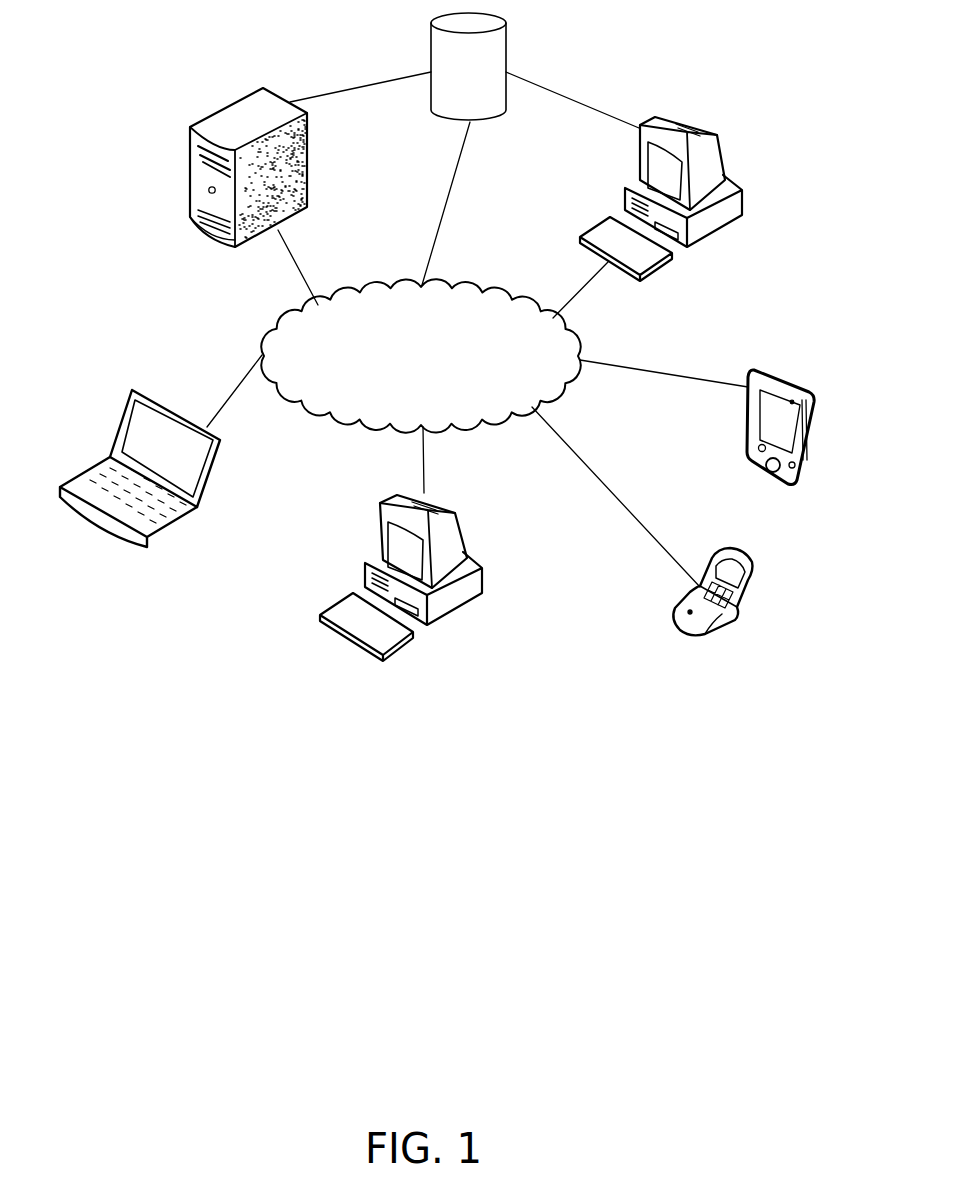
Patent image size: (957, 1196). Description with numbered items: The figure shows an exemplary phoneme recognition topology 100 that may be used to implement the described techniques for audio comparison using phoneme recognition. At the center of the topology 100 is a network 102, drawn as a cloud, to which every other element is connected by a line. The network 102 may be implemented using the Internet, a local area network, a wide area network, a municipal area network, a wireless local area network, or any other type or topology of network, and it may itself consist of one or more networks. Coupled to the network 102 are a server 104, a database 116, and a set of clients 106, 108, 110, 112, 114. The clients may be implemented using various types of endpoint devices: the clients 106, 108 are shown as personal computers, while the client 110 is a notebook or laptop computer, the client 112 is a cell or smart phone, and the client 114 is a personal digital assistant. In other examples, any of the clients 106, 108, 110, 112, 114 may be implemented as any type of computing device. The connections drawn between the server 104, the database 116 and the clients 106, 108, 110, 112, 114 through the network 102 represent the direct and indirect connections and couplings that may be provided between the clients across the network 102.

The topology 100 is at (118, 872).
The network 102 is at (443, 398).
The server 104 is at (213, 114).
The client 106 is at (712, 143).
The client 108 is at (485, 567).
The client 110 is at (211, 487).
The client 112 is at (755, 573).
The client 114 is at (820, 432).
The database 116 is at (489, 81).